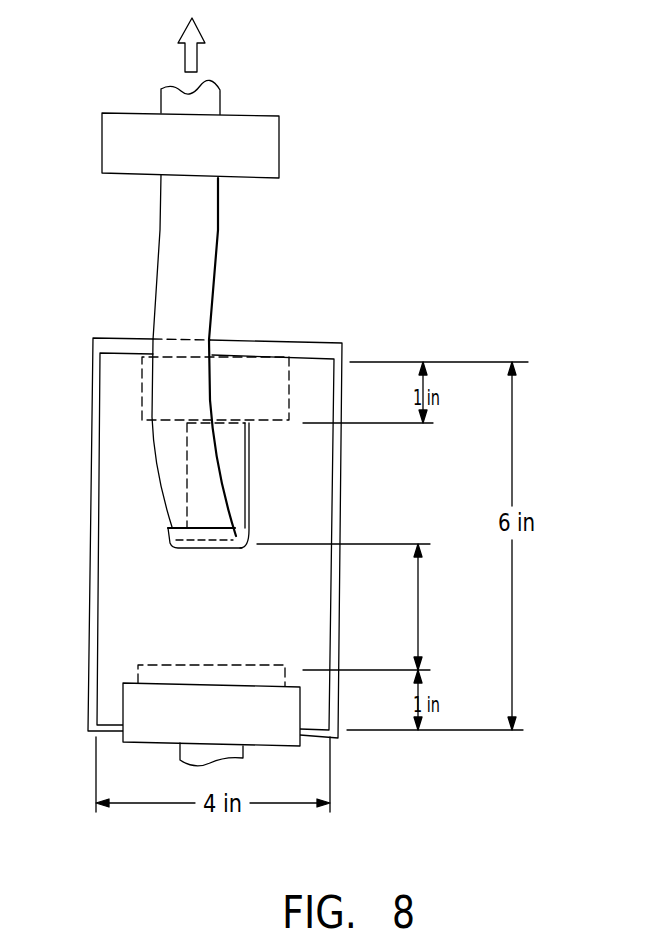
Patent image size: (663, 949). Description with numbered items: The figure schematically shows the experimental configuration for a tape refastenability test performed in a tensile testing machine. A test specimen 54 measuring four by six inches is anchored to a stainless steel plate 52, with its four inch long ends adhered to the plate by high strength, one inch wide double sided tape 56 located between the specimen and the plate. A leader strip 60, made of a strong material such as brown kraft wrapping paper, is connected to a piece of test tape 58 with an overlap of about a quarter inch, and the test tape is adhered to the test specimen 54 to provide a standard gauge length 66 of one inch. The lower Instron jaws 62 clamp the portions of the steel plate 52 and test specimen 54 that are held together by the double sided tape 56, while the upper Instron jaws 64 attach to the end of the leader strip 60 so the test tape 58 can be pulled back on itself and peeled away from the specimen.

The stainless steel plate 52 is at (315, 342).
The test specimen 54 is at (112, 560).
The double sided tape 56 is at (140, 417).
The test tape 58 is at (237, 457).
The leader strip 60 is at (208, 278).
The lower Instron jaws 62 is at (263, 723).
The upper Instron jaws 64 is at (128, 162).
The gauge length 66 is at (418, 607).